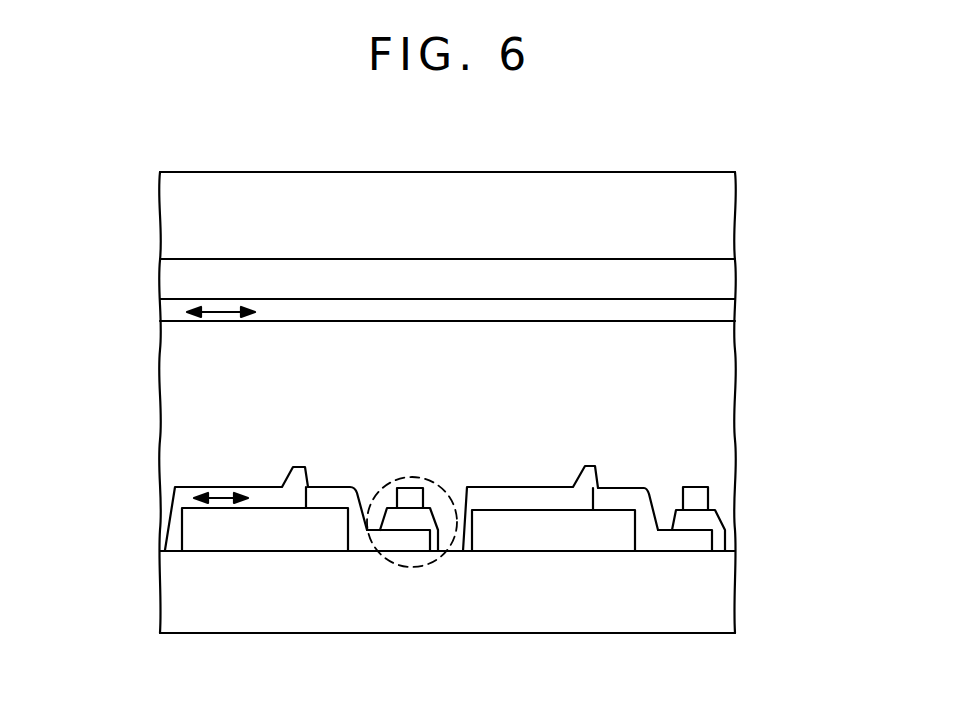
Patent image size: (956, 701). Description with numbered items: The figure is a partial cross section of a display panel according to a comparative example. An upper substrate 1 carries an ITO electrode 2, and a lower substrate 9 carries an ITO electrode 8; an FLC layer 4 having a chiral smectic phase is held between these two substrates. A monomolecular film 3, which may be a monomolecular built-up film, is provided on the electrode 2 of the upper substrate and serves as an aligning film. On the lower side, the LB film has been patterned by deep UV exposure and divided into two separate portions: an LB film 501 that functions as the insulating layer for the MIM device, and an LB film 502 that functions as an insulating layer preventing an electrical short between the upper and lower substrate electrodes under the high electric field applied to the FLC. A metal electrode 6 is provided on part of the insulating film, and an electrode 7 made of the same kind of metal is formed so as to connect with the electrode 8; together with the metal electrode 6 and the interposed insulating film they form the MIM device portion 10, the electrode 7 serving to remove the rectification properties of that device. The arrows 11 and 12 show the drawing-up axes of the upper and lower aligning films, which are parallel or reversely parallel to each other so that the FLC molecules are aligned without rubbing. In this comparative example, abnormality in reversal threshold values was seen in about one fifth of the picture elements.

The upper substrate 1 is at (720, 222).
The ITO electrode 2 is at (718, 278).
The monomolecular film 3 is at (725, 312).
The FLC layer 4 is at (718, 368).
The metal electrode 6 is at (702, 500).
The electrode 7 is at (675, 542).
The ITO electrode 8 is at (197, 538).
The lower substrate 9 is at (193, 593).
The MIM device portion 10 is at (408, 568).
The arrow 11 is at (217, 312).
The arrow 12 is at (222, 497).
The LB film 501 is at (719, 525).
The LB film 502 is at (175, 500).